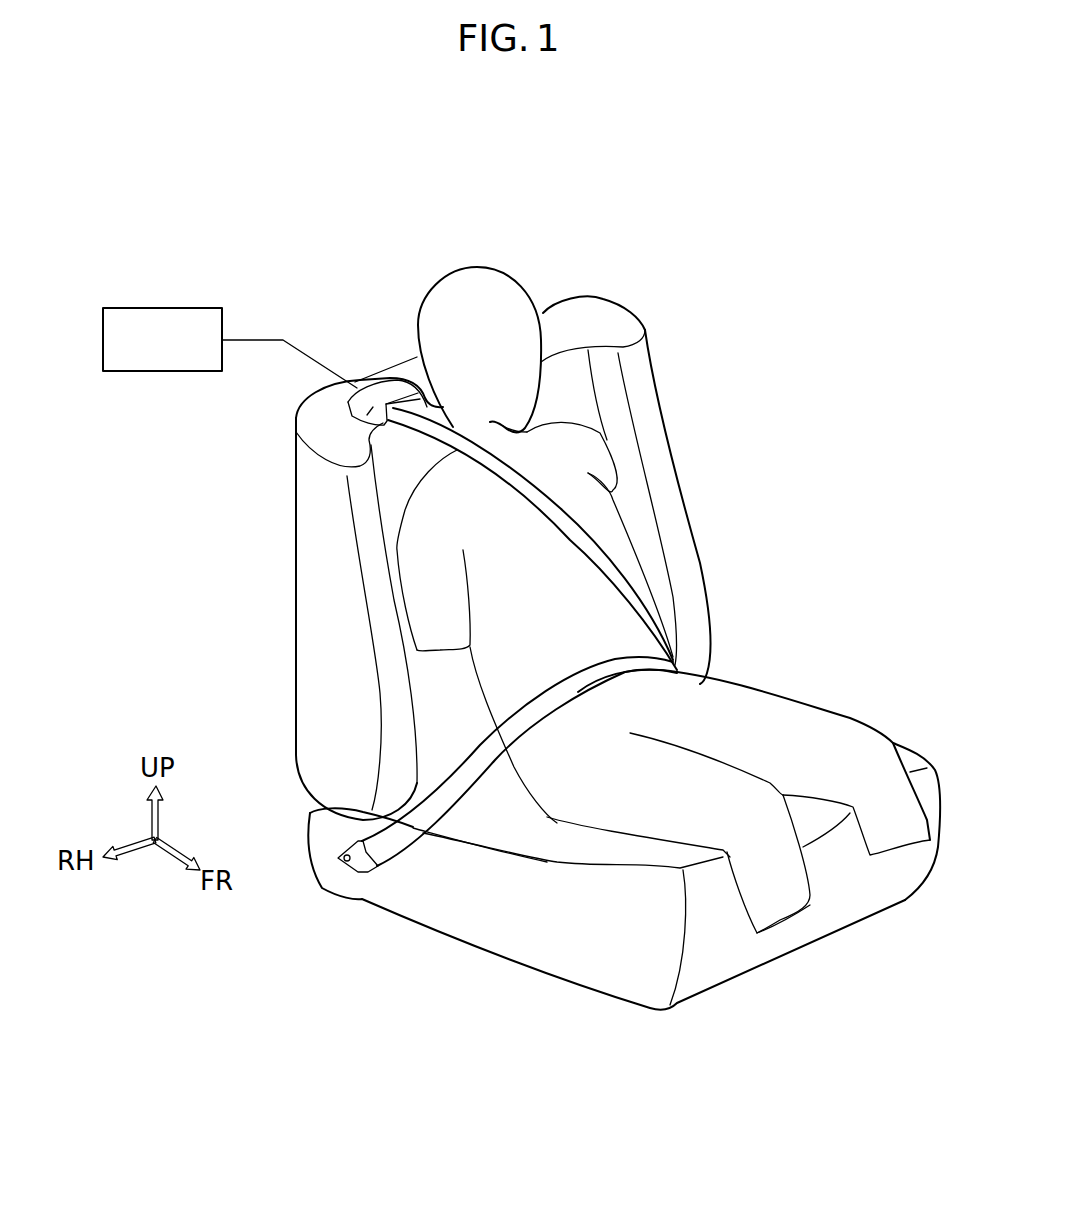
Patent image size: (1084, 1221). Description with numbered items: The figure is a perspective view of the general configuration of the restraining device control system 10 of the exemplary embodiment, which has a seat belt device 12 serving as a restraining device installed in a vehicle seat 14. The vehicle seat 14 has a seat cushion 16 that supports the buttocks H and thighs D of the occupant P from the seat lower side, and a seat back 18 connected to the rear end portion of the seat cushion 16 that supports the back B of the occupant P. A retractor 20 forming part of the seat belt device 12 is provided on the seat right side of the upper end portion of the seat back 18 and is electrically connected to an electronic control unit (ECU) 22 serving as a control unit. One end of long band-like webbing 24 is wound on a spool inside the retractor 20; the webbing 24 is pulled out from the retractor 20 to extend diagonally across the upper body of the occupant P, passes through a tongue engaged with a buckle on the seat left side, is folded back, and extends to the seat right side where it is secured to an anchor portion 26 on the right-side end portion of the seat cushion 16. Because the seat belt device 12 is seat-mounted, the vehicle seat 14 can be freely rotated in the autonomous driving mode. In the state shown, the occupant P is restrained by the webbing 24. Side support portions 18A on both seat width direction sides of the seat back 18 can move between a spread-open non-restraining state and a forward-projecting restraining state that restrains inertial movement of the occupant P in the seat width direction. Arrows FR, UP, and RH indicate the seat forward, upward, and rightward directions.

The restraining device control system 10 is at (229, 252).
The seat belt device 12 is at (368, 352).
The vehicle seat 14 is at (685, 495).
The seat cushion 16 is at (457, 940).
The seat back 18 is at (294, 607).
The side support portions 18A is at (350, 525).
The retractor 20 is at (375, 424).
The electronic control unit (ECU) 22 is at (183, 372).
The webbing 24 is at (613, 568).
The anchor portion 26 is at (363, 877).
The occupant P is at (504, 271).
The back B is at (470, 677).
The buttocks H is at (557, 820).
The thighs D is at (648, 838).